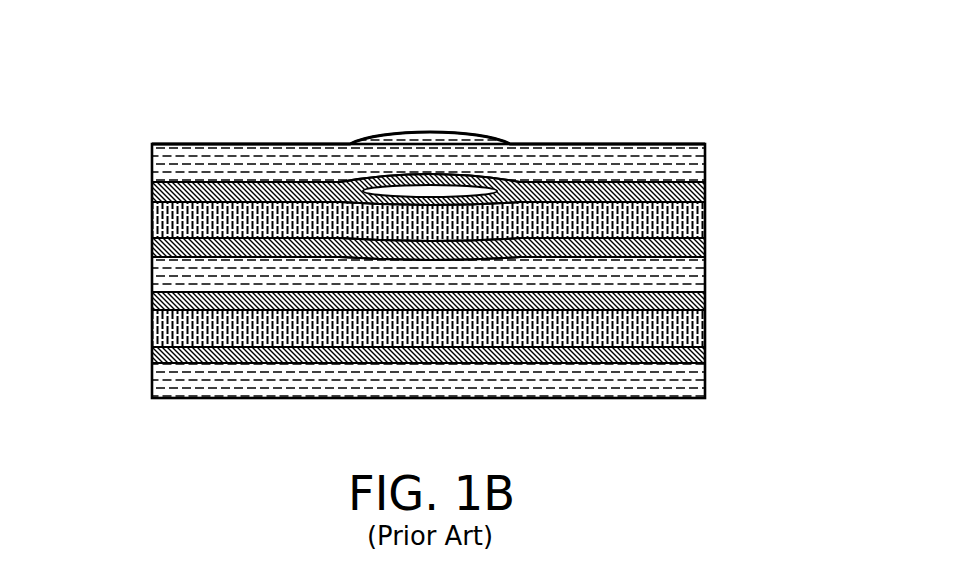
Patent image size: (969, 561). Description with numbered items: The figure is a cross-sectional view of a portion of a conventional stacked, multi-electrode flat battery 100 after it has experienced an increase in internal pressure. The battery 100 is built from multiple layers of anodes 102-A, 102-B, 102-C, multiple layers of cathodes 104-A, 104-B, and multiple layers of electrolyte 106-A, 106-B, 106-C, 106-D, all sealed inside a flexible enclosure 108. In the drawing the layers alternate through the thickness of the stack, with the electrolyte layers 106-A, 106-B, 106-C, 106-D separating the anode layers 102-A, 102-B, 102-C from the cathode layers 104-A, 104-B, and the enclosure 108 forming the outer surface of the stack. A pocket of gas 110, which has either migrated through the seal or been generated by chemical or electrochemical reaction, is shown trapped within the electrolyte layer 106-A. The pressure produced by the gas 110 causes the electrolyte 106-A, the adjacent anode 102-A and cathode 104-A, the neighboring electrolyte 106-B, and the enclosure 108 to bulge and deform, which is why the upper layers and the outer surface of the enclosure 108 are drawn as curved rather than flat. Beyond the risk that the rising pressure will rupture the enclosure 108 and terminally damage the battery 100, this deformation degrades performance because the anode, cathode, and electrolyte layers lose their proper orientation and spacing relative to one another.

The flat battery 100 is at (438, 214).
The anode layer 102-A is at (705, 157).
The anode layer 102-B is at (690, 268).
The anode layer 102-C is at (690, 378).
The cathode layer 104-A is at (690, 213).
The cathode layer 104-B is at (690, 323).
The electrolyte layer 106-A is at (372, 135).
The electrolyte layer 106-B is at (152, 252).
The electrolyte layer 106-C is at (152, 305).
The electrolyte layer 106-D is at (152, 359).
The flexible enclosure 108 is at (220, 143).
The gas 110 is at (437, 191).